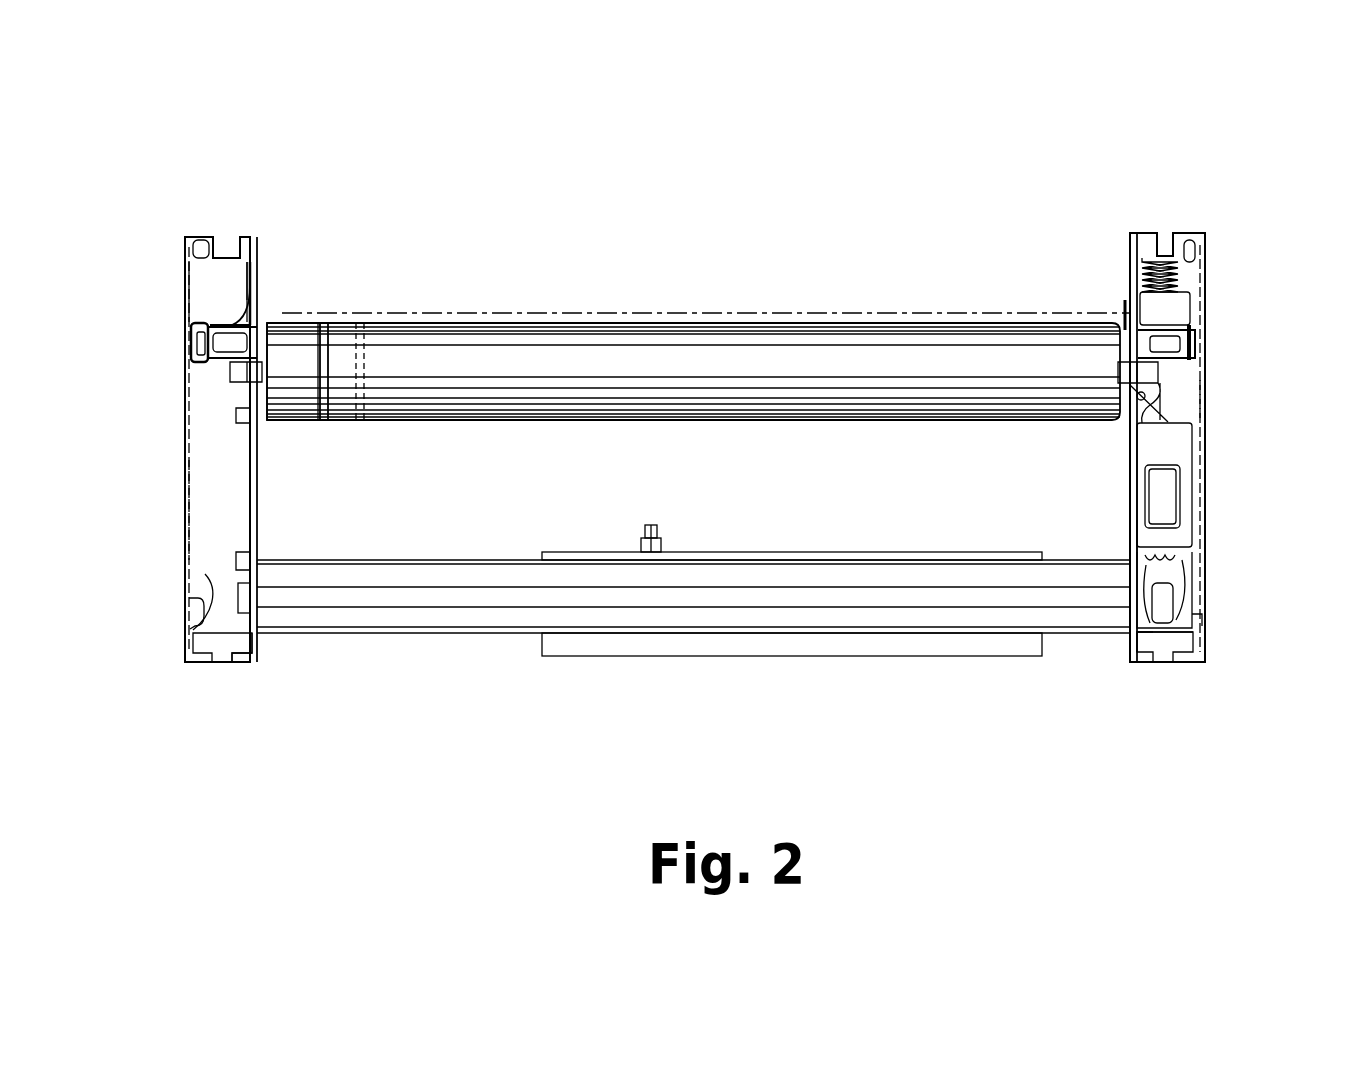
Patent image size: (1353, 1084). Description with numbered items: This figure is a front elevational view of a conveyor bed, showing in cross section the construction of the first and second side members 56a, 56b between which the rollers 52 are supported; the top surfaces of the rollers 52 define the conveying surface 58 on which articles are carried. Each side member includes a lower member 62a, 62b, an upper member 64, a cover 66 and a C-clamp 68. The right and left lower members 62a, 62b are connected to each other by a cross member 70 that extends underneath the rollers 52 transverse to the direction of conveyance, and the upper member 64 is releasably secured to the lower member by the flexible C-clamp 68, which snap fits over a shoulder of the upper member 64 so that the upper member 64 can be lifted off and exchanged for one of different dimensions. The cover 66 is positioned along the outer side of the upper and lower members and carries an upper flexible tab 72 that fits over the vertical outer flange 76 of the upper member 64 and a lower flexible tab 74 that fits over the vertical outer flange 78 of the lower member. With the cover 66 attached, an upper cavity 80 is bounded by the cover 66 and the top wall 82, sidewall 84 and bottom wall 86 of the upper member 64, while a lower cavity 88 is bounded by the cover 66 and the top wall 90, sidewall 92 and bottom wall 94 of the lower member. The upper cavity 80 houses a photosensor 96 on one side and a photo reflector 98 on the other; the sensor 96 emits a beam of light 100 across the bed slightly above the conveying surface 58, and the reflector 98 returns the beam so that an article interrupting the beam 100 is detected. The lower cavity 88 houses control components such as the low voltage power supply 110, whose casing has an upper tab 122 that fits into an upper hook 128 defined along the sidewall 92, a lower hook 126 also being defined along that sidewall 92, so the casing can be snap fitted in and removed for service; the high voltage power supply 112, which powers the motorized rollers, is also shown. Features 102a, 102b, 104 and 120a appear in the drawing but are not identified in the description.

The rollers 52 is at (668, 323).
The first side member 56a is at (221, 670).
The second side member 56b is at (1162, 668).
The conveying surface 58 is at (550, 323).
The lower member 62a is at (258, 514).
The lower member 62b is at (1128, 487).
The upper member 64 is at (258, 272).
The cover 66 is at (182, 438).
The C-clamp 68 is at (195, 325).
The cross member 70 is at (450, 560).
The upper flexible tab 72 is at (187, 275).
The lower flexible tab 74 is at (187, 600).
The vertical outer flange 76 is at (185, 237).
The vertical outer flange 78 is at (205, 574).
The upper cavity 80 is at (218, 307).
The top wall 82 is at (228, 250).
The sidewall 84 is at (252, 252).
The bottom wall 86 is at (256, 308).
The lower cavity 88 is at (223, 515).
The top wall 90 is at (215, 362).
The sidewall 92 is at (257, 537).
The bottom wall 94 is at (233, 647).
The photosensor 96 is at (1128, 317).
The photo reflector 98 is at (262, 318).
The beam of light 100 is at (890, 318).
The first groove 102a is at (326, 392).
The second groove 102b is at (358, 332).
The end cap 104 is at (315, 395).
The low voltage power supply 110 is at (1197, 462).
The high voltage power supply 112 is at (762, 660).
The latch member 120a is at (1128, 595).
The upper tab 122 is at (1138, 427).
The lower hook 126 is at (1200, 537).
The upper hook 128 is at (1140, 398).